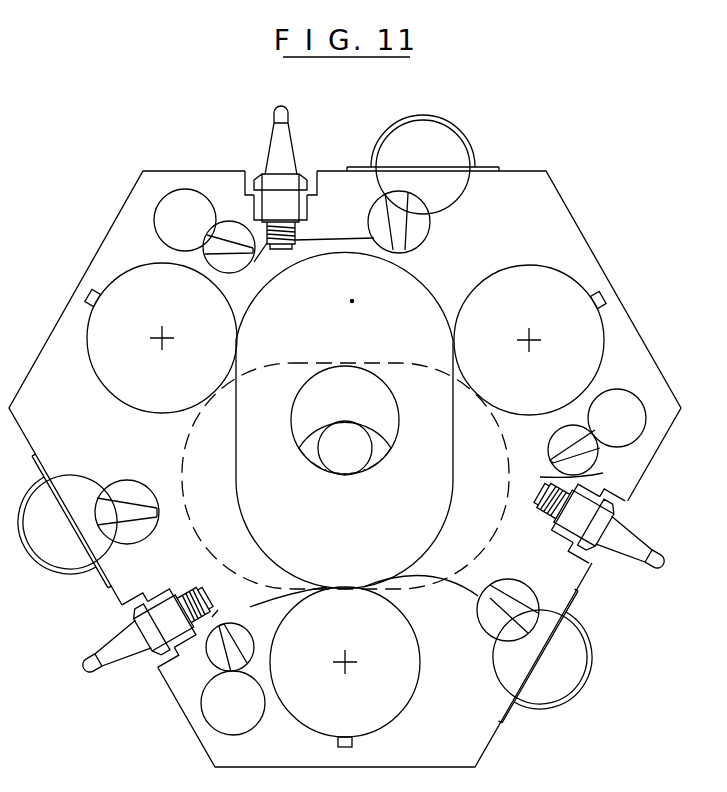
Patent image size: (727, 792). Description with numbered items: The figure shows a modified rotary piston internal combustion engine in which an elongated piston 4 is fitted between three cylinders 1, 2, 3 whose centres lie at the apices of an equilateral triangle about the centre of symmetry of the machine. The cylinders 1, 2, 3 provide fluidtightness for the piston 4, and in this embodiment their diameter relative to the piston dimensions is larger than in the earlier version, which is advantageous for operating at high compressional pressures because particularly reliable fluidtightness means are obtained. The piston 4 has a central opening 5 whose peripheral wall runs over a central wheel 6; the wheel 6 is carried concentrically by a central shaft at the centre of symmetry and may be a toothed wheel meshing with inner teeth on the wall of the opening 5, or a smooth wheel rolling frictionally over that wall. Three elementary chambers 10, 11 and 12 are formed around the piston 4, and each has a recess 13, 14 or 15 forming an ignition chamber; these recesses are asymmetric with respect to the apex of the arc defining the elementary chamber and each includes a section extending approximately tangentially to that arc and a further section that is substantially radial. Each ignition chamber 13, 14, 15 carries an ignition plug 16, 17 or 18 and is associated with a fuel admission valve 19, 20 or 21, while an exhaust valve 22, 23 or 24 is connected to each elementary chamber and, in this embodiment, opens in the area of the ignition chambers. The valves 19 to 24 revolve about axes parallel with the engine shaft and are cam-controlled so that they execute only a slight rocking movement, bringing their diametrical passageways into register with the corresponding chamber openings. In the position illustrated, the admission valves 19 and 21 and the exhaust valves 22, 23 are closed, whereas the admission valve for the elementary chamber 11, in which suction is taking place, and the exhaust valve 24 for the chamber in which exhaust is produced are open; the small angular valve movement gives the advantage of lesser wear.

The cylinder 1 is at (538, 280).
The cylinder 2 is at (395, 692).
The cylinder 3 is at (105, 366).
The piston 4 is at (344, 297).
The opening 5 is at (373, 373).
The central wheel 6 is at (323, 437).
The elementary chamber 10 is at (425, 290).
The elementary chamber 11 is at (437, 590).
The elementary chamber 12 is at (175, 462).
The ignition chamber 13 is at (317, 243).
The ignition chamber 14 is at (582, 470).
The ignition chamber 15 is at (218, 610).
The ignition plug 16 is at (292, 208).
The ignition plug 17 is at (570, 520).
The ignition plug 18 is at (167, 613).
The fuel admission valve 19 is at (232, 263).
The fuel admission valve 20 is at (562, 438).
The fuel admission valve 21 is at (245, 643).
The exhaust valve 22 is at (418, 232).
The exhaust valve 23 is at (492, 625).
The exhaust valve 24 is at (120, 490).